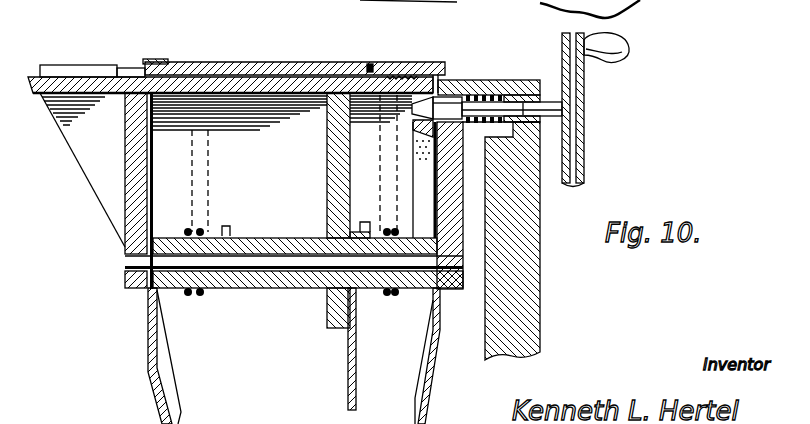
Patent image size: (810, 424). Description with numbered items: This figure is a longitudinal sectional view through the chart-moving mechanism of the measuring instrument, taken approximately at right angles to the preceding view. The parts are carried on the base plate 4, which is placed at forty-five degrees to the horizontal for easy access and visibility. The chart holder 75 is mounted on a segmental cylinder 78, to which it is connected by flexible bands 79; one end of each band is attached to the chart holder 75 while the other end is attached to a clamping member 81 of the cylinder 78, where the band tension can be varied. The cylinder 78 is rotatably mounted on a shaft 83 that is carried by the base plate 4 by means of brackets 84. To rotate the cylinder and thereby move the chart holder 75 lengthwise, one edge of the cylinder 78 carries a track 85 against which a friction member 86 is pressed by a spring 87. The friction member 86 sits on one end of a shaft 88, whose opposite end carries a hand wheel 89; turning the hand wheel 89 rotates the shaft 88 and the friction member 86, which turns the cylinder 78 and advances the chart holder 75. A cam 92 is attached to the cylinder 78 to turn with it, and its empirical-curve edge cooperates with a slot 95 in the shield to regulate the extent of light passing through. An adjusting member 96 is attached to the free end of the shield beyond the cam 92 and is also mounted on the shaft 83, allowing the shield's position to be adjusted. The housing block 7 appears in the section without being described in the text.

The base plate 4 is at (58, 90).
The housing block 7 is at (541, 286).
The chart holder 75 is at (272, 64).
The segmental cylinder 78 is at (292, 96).
The flexible bands 79 is at (200, 74).
The clamping member 81 is at (200, 295).
The shaft 83 is at (275, 270).
The brackets 84 is at (133, 170).
The track 85 is at (420, 176).
The friction member 86 is at (438, 104).
The spring 87 is at (485, 97).
The shaft 88 is at (553, 106).
The hand wheel 89 is at (575, 147).
The cam 92 is at (348, 386).
The slot 95 is at (430, 401).
The adjusting member 96 is at (158, 402).